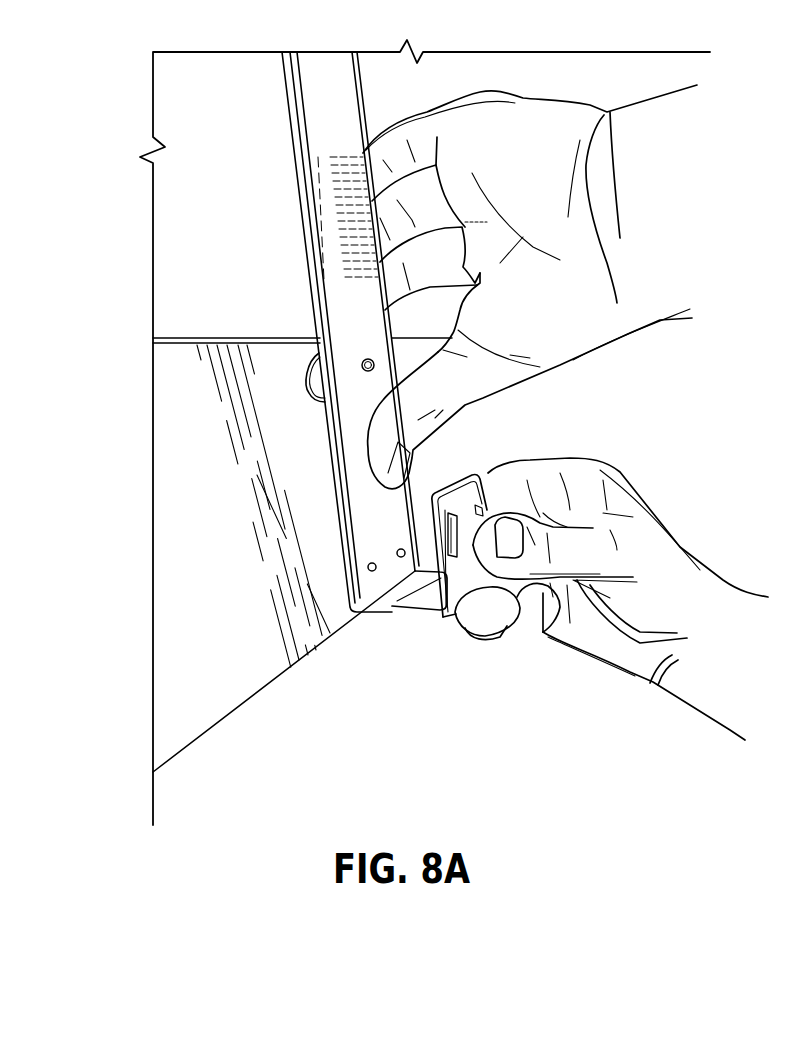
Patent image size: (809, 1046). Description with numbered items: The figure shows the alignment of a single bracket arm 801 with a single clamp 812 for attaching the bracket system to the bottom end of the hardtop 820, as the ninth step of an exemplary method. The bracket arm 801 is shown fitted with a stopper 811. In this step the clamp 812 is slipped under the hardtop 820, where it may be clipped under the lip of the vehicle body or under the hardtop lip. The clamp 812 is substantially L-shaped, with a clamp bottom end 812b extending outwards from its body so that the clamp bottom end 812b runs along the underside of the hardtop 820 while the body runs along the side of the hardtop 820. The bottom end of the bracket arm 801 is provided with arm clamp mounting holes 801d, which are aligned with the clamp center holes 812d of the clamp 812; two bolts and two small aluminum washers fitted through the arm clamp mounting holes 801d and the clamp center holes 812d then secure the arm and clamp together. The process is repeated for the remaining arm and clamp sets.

The bracket arm 801 is at (320, 307).
The arm clamp mounting holes 801d is at (399, 557).
The stopper 811 is at (322, 405).
The clamp 812 is at (455, 482).
The clamp bottom end 812b is at (382, 635).
The clamp center holes 812d is at (483, 506).
The hardtop 820 is at (232, 615).